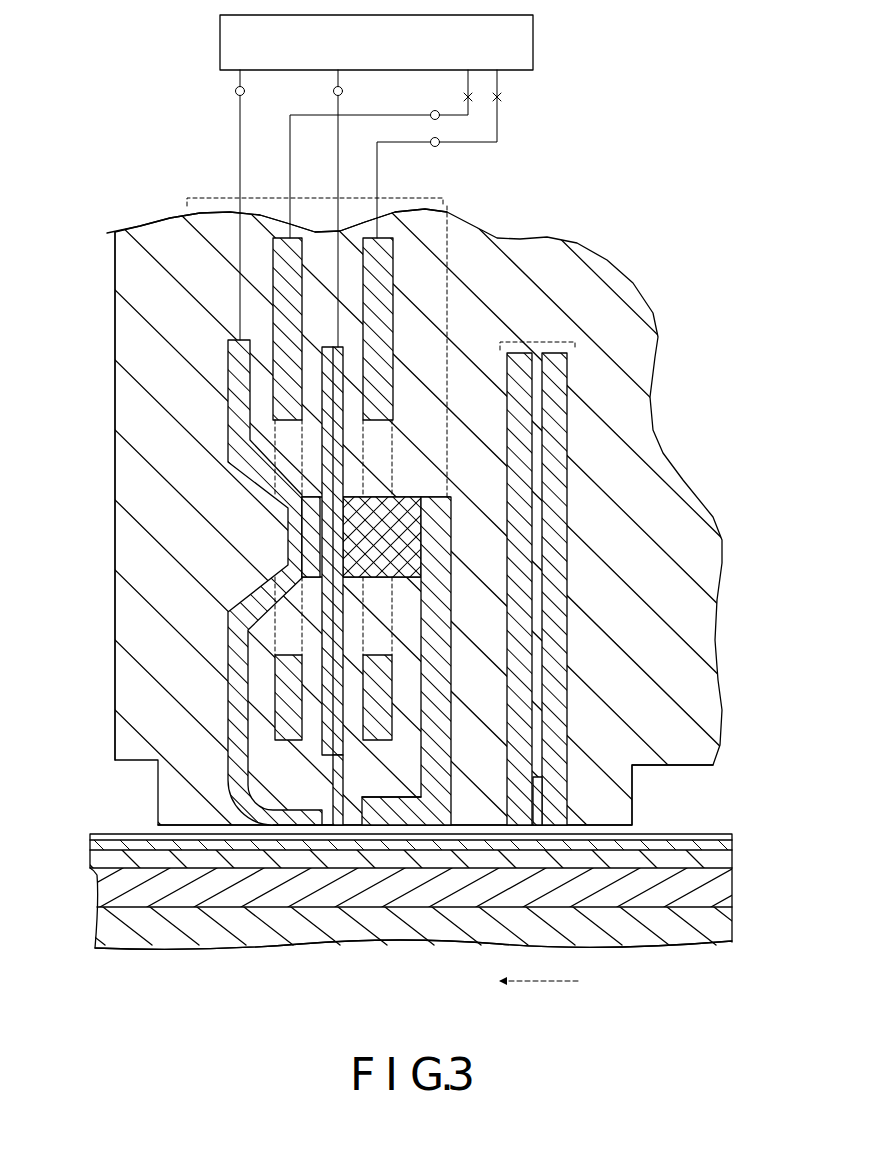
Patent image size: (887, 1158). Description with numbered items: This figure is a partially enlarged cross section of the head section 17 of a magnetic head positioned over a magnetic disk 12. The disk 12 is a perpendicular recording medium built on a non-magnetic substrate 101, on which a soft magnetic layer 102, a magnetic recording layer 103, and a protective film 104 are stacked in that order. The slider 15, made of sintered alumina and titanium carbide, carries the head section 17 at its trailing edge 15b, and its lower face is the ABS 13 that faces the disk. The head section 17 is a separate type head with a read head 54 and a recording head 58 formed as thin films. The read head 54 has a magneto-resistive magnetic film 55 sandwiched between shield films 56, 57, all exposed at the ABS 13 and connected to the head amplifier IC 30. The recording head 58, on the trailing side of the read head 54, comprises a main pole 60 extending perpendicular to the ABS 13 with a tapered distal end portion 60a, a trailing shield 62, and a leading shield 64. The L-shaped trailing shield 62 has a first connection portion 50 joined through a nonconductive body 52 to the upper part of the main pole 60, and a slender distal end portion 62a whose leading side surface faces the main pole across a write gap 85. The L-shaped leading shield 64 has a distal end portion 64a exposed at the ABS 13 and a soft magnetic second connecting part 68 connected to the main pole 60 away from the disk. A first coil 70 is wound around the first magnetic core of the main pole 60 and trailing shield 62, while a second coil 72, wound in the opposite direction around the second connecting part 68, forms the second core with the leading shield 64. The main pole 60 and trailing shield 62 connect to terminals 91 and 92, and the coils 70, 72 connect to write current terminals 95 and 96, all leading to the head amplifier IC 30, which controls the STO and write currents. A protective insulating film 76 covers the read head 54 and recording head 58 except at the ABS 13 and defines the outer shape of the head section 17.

The magnetic disk 12 is at (185, 968).
The ABS 13 is at (652, 771).
The slider 15 is at (640, 339).
The trailing edge 15b is at (115, 448).
The head section 17 is at (548, 236).
The head amplifier IC 30 is at (220, 46).
The first connection portion 50 is at (296, 548).
The nonconductive body 52 is at (300, 525).
The read head 54 is at (538, 342).
The magnetic film 55 is at (542, 800).
The shield film 56 is at (567, 537).
The shield film 57 is at (530, 483).
The recording head 58 is at (315, 198).
The main pole 60 is at (343, 742).
The distal end portion 60a is at (343, 830).
The trailing shield 62 is at (225, 628).
The distal end portion 62a is at (283, 822).
The leading shield 64 is at (452, 580).
The distal end portion 64a is at (420, 828).
The second connecting part 68 is at (424, 497).
The first coil 70 is at (273, 306).
The second coil 72 is at (393, 343).
The protective insulating film 76 is at (140, 236).
The write gap 85 is at (328, 828).
The terminal 91 is at (333, 92).
The terminal 92 is at (235, 92).
The write current terminal 95 is at (431, 111).
The write current terminal 96 is at (440, 146).
The substrate 101 is at (95, 927).
The soft magnetic layer 102 is at (97, 886).
The magnetic recording layer 103 is at (90, 859).
The protective film 104 is at (90, 841).